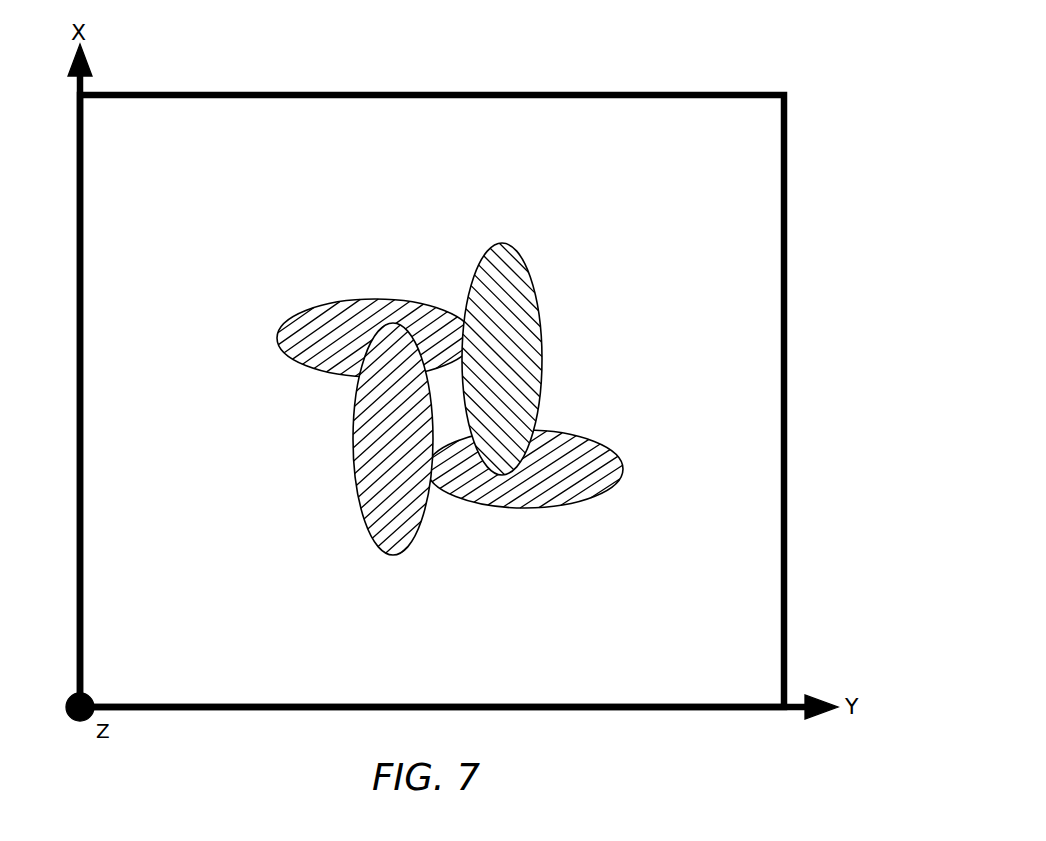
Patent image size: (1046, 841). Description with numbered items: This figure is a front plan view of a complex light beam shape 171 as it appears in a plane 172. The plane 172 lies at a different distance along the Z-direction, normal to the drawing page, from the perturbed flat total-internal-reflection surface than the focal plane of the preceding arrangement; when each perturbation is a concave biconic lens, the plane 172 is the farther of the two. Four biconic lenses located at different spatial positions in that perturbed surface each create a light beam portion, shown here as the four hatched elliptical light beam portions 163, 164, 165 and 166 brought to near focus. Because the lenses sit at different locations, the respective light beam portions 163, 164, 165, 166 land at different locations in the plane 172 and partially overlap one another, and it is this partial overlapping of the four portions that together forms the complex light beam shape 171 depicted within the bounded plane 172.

The light beam portion 163 is at (312, 330).
The light beam portion 164 is at (508, 277).
The light beam portion 165 is at (593, 455).
The light beam portion 166 is at (393, 550).
The complex light beam shape 171 is at (382, 208).
The plane 172 is at (665, 90).